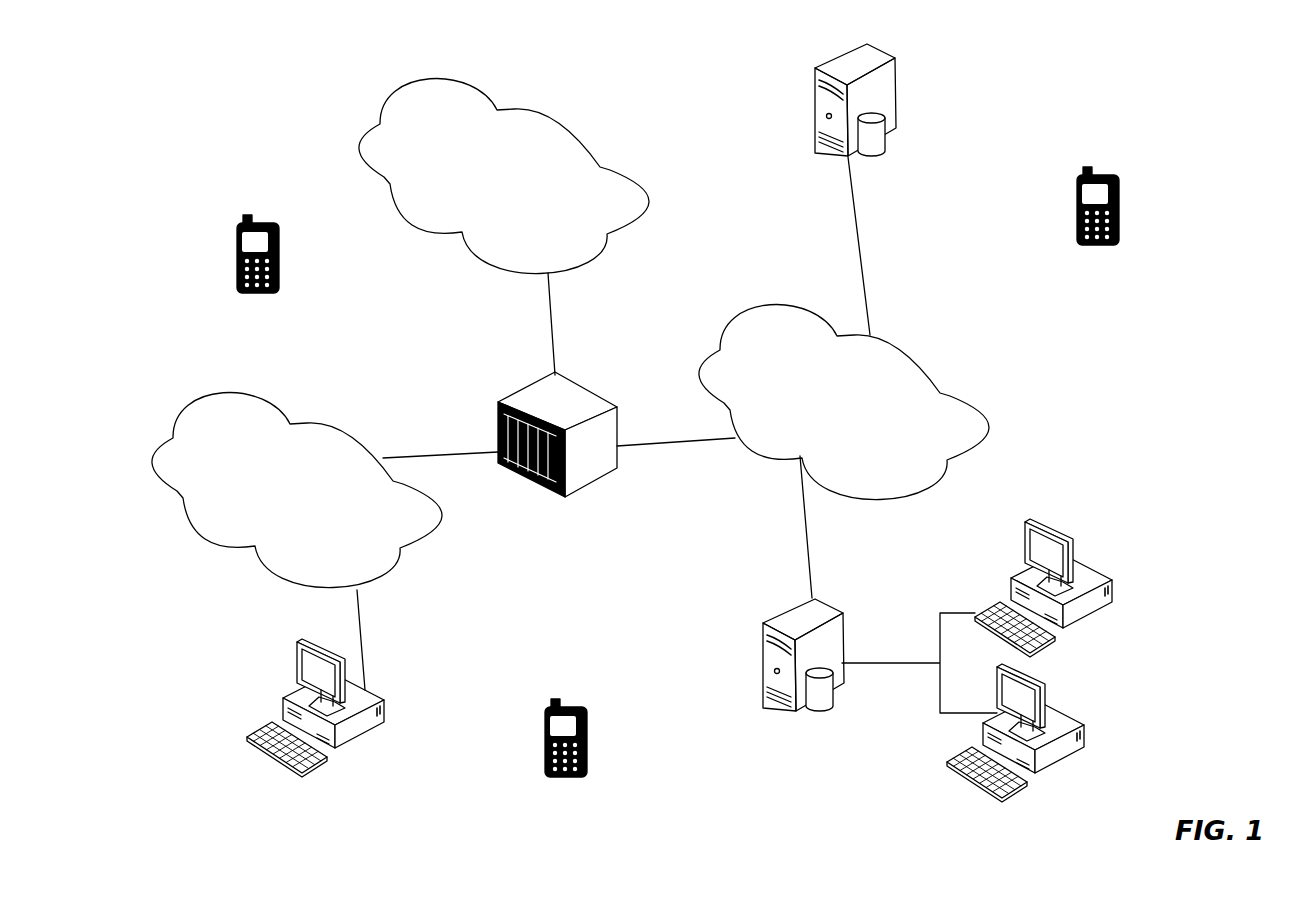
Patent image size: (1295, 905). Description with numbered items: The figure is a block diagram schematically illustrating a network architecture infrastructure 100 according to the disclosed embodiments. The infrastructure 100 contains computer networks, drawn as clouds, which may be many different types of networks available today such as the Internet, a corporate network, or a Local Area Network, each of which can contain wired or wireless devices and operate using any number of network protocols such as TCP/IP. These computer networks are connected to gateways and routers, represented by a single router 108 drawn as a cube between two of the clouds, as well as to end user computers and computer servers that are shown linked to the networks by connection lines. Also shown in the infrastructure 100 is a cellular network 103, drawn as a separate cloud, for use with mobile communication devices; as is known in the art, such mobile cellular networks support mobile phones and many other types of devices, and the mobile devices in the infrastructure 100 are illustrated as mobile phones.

The network architecture infrastructure 100 is at (988, 112).
The cellular network 103 is at (504, 172).
The gateways and routers 108 is at (582, 419).